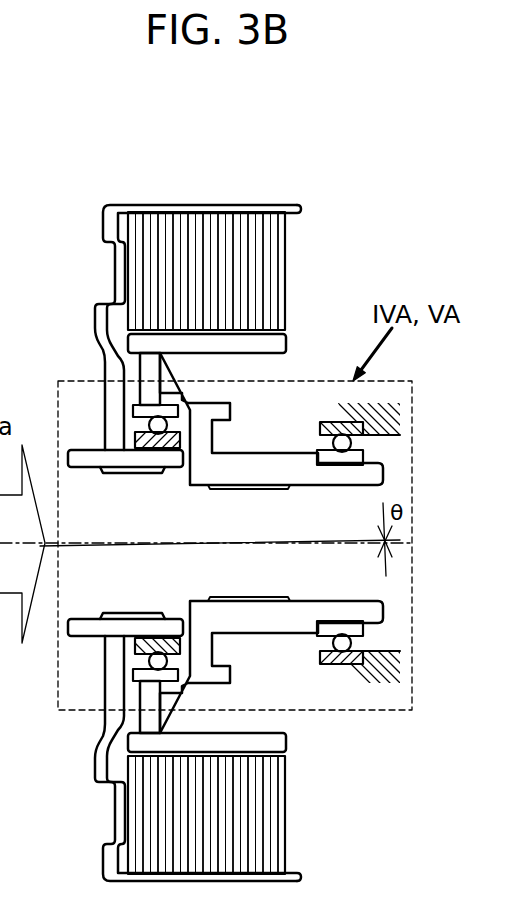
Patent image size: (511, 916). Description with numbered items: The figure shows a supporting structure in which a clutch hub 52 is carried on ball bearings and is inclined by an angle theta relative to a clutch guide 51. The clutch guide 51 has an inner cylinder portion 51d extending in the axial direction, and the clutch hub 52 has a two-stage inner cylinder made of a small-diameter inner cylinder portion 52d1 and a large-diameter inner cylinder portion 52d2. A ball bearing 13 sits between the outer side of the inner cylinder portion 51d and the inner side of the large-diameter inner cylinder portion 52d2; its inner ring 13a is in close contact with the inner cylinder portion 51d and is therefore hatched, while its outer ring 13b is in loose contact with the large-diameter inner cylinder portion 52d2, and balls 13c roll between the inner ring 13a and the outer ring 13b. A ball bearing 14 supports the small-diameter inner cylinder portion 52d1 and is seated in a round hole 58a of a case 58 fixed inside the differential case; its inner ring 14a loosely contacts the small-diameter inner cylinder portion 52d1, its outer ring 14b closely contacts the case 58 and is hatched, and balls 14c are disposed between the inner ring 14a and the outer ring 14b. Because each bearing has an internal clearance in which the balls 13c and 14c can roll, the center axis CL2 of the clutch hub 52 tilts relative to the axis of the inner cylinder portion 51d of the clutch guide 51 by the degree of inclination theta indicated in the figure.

The clutch guide 51 is at (112, 205).
The inner cylinder portion 51d is at (163, 470).
The clutch hub 52 is at (292, 343).
The small-diameter inner cylinder portion 52d1 is at (230, 472).
The large-diameter inner cylinder portion 52d2 is at (168, 398).
The ball bearing 13 is at (132, 518).
The inner ring 13a is at (147, 447).
The outer ring 13b is at (172, 408).
The balls 13c is at (137, 412).
The ball bearing 14 is at (357, 524).
The inner ring 14a is at (348, 457).
The outer ring 14b is at (327, 421).
The balls 14c is at (352, 444).
The case 58 is at (399, 519).
The round hole 58a is at (367, 425).
The center axis CL2 is at (82, 547).